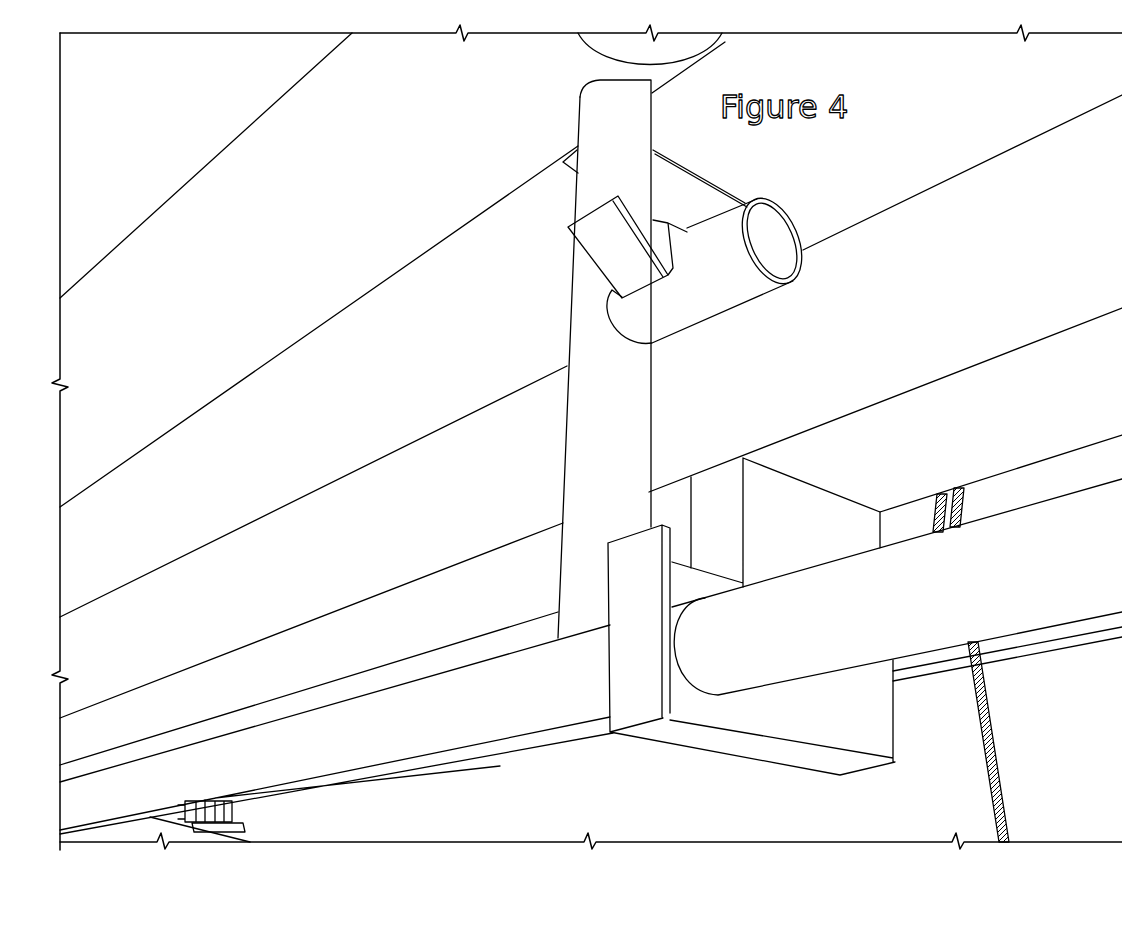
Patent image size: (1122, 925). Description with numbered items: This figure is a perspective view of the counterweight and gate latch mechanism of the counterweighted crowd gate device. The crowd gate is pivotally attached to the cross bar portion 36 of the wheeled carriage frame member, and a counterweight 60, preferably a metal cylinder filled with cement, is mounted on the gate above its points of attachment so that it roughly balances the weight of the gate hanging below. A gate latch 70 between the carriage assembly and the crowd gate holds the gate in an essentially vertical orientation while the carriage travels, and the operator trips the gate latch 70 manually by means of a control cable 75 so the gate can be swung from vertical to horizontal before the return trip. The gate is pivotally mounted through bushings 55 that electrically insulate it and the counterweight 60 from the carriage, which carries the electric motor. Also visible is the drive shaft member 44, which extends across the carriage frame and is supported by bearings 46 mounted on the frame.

The counterweight 60 is at (384, 174).
The cross bar portion 36 is at (980, 207).
The gate latch 70 is at (600, 240).
The drive shaft member 44 is at (407, 775).
The bearings 46 is at (247, 837).
The bushings 55 is at (684, 700).
The control cable 75 is at (1001, 776).